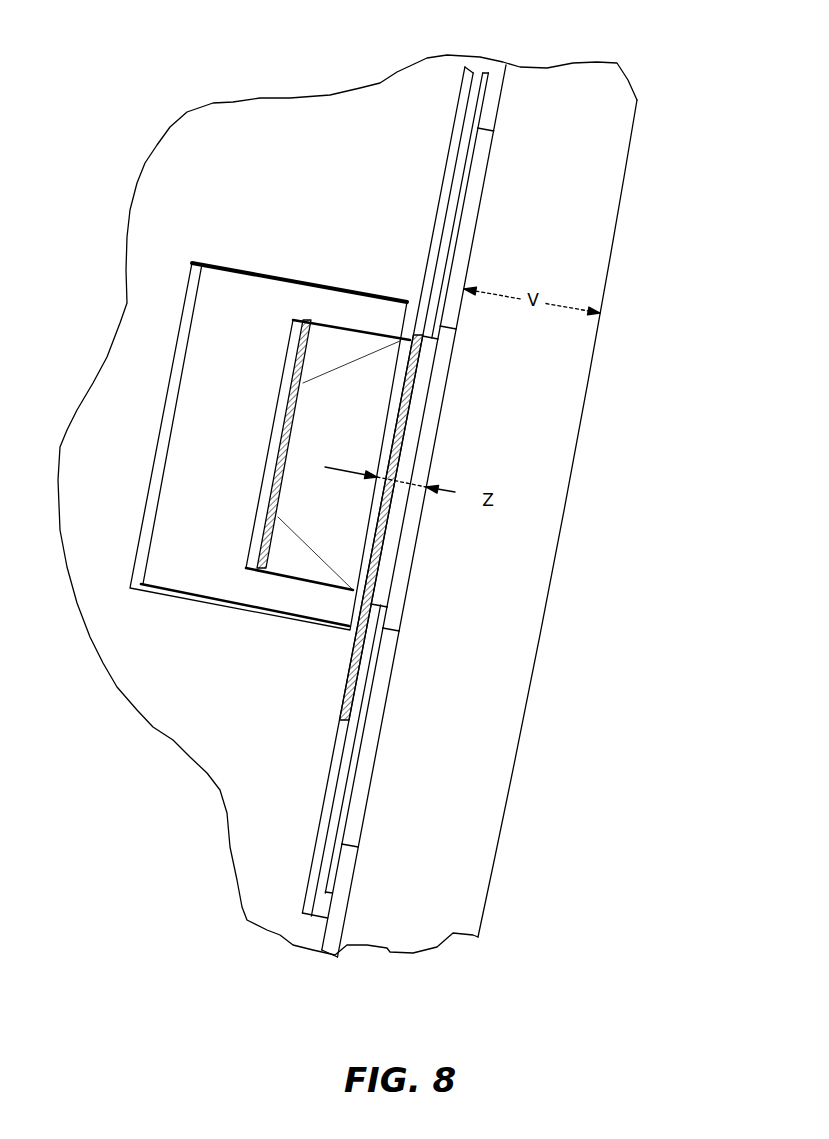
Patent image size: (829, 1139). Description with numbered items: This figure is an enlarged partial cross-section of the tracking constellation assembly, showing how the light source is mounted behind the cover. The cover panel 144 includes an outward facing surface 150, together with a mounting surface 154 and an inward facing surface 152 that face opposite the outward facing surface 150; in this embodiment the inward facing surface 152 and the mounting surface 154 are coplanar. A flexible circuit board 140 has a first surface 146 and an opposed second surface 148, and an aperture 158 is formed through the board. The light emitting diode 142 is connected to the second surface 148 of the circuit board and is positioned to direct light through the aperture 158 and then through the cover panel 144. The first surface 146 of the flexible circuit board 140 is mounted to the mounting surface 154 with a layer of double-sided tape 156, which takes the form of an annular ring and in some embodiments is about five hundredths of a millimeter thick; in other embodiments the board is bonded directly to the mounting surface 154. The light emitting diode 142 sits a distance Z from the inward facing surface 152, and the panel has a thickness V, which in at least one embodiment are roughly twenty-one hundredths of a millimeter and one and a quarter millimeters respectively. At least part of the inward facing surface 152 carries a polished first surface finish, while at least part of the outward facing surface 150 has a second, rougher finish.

The flexible circuit board 140 is at (411, 495).
The light emitting diode 142 is at (212, 265).
The cover panel 144 is at (627, 168).
The first surface 146 is at (332, 893).
The second surface 148 is at (303, 910).
The outward facing surface 150 is at (583, 403).
The inward facing surface 152 is at (434, 444).
The mounting surface 154 is at (479, 207).
The double-sided tape 156 is at (372, 698).
The aperture 158 is at (388, 555).